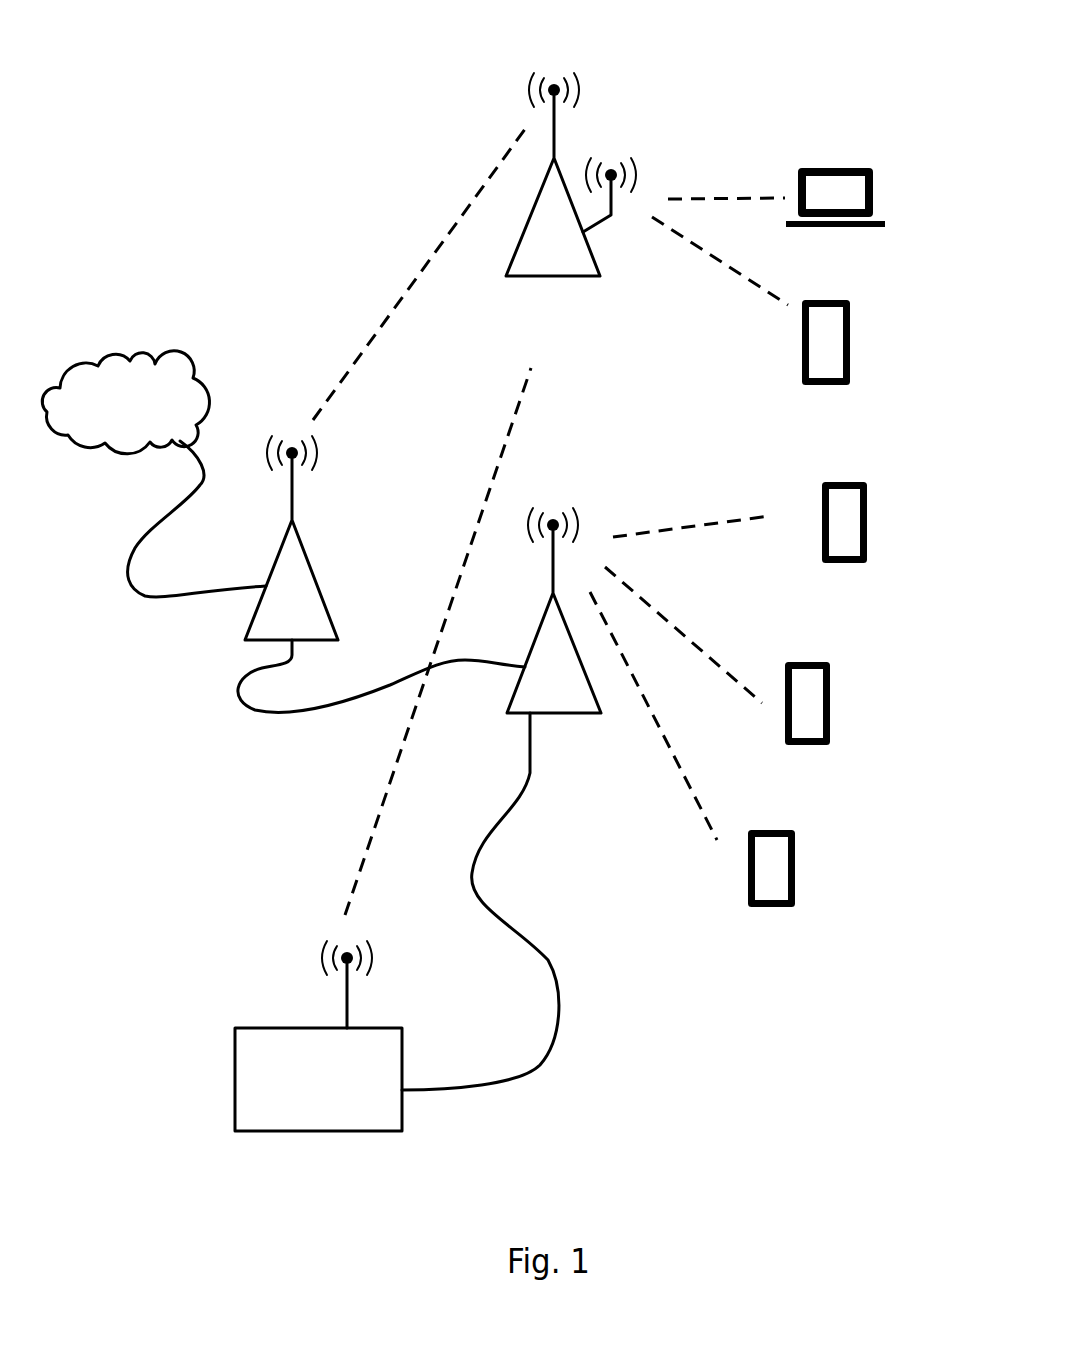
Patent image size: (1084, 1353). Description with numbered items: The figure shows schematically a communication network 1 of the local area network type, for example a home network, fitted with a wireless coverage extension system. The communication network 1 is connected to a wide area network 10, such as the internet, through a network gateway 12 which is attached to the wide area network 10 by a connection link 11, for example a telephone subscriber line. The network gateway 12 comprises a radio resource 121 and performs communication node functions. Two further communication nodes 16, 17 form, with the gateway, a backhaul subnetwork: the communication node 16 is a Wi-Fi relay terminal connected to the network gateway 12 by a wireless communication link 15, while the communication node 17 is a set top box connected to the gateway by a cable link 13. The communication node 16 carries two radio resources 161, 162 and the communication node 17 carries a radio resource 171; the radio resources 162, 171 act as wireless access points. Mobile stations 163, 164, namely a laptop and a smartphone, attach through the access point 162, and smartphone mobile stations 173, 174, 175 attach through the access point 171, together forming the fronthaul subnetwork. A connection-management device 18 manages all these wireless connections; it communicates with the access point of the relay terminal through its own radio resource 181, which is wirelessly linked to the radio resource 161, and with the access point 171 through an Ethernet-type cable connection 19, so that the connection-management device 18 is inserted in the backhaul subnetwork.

The communication network 1 is at (264, 113).
The wide area network 10 is at (140, 352).
The connection link 11 is at (145, 597).
The network gateway 12 is at (335, 615).
The radio resource 121 is at (335, 452).
The cable link 13 is at (295, 718).
The wireless communication link 15 is at (417, 267).
The communication node 16 is at (553, 277).
The radio resource 161 is at (602, 82).
The radio resource 162 is at (655, 170).
The mobile station 163 is at (862, 168).
The mobile station 164 is at (850, 307).
The communication node 17 is at (568, 713).
The radio resource 171 is at (570, 490).
The mobile station 173 is at (866, 520).
The mobile station 174 is at (827, 725).
The mobile station 175 is at (795, 862).
The connection-management device 18 is at (270, 1025).
The radio resource 181 is at (368, 942).
The cable connection 19 is at (525, 1062).